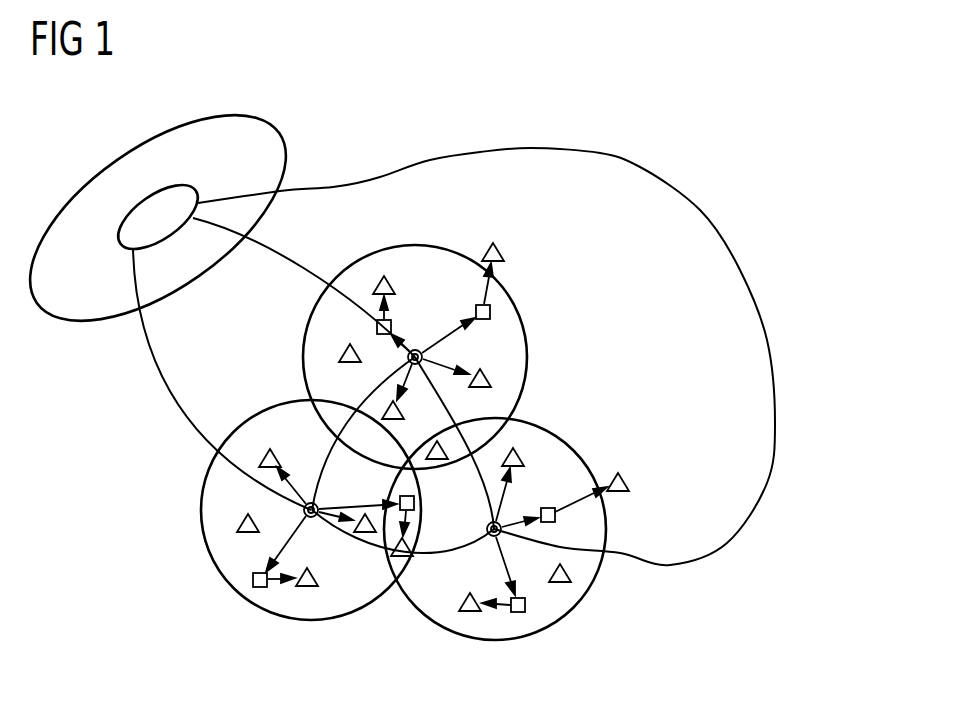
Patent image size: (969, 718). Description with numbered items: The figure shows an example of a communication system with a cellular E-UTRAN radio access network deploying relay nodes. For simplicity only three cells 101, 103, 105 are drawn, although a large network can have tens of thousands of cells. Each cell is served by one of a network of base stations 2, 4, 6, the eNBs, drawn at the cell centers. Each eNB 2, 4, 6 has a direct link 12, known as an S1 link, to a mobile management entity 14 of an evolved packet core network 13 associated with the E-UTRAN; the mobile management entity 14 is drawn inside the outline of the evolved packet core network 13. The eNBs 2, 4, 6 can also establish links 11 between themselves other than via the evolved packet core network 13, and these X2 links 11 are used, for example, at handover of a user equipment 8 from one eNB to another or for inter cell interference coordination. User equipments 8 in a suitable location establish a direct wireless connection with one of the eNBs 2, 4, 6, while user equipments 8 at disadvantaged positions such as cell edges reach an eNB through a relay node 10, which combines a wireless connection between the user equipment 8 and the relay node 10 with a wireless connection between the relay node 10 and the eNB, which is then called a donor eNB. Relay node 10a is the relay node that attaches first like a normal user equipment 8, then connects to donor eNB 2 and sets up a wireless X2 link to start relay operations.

The base station 2 is at (418, 346).
The base station 4 is at (501, 524).
The base station 6 is at (320, 503).
The user equipment 8 is at (394, 280).
The relay node 10 is at (254, 575).
The relay node 10a is at (493, 312).
The X2 link 11 is at (323, 450).
The direct link 12 is at (162, 390).
The evolved packet core network 13 is at (111, 150).
The mobile management entity 14 is at (121, 244).
The cell 101 is at (415, 245).
The cell 103 is at (492, 640).
The cell 105 is at (200, 512).